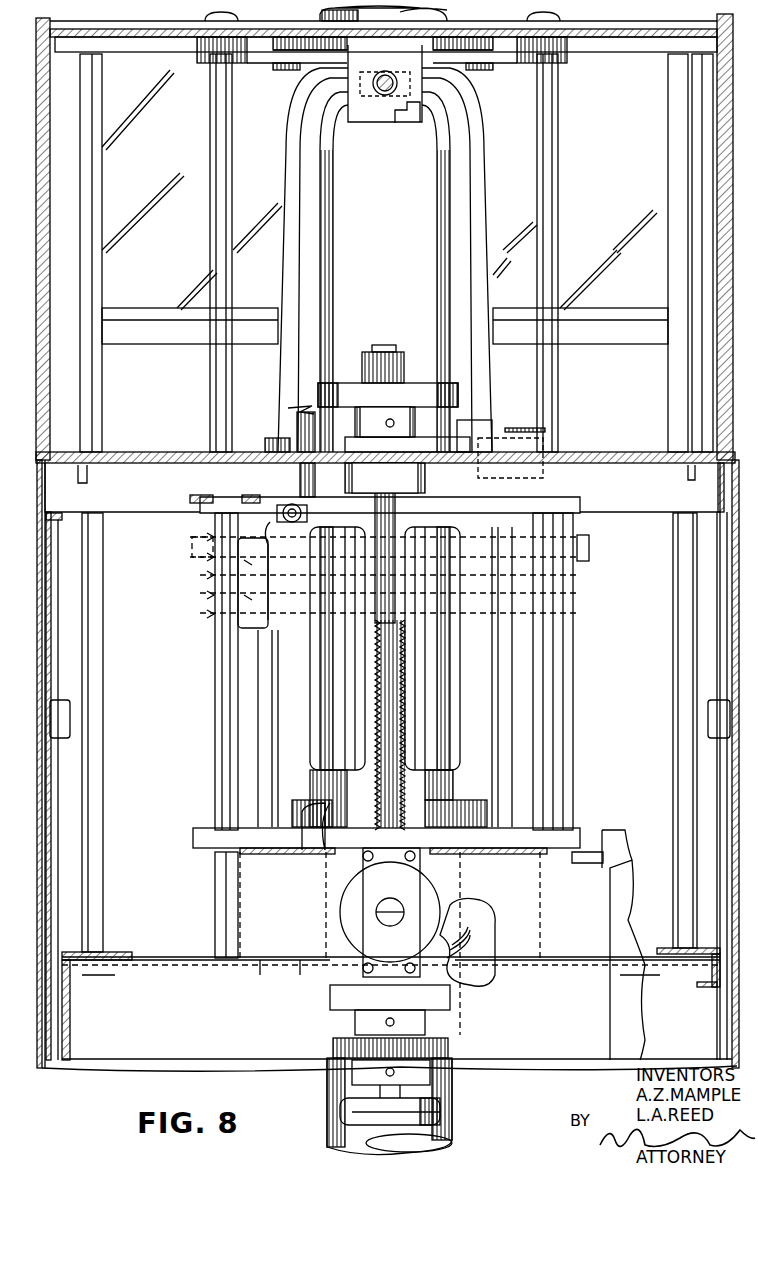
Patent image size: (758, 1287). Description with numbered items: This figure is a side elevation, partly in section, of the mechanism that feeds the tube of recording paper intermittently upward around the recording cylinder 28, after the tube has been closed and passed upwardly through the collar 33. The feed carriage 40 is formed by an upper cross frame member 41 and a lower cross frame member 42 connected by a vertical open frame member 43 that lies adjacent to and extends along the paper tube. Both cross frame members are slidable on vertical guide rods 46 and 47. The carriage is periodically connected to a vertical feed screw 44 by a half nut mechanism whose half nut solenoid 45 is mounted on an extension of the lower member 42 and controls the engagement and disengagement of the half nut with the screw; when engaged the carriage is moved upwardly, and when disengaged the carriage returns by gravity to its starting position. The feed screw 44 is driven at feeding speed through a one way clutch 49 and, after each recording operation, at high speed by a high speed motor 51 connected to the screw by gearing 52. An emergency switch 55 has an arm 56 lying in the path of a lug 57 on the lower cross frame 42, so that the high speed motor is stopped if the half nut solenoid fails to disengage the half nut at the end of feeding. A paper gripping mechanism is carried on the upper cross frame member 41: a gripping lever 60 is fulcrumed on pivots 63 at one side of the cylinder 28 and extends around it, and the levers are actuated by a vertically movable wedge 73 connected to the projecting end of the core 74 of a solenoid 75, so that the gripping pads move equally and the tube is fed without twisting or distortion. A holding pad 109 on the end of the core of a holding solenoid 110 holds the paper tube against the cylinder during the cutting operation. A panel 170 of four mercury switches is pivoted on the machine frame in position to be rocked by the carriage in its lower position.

The recording cylinder 28 is at (330, 1106).
The collar 33 is at (452, 948).
The feed carriage 40 is at (208, 746).
The upper cross frame member 41 is at (516, 497).
The lower cross frame member 42 is at (589, 543).
The vertical open frame member 43 is at (313, 711).
The vertical feed screw 44 is at (406, 713).
The half nut solenoid 45 is at (420, 906).
The vertical guide rod 46 is at (214, 220).
The vertical guide rod 47 is at (548, 240).
The one way clutch 49 is at (356, 395).
The high speed motor 51 is at (431, 1111).
The gearing 52 is at (428, 1050).
The emergency switch 55 is at (258, 630).
The arm 56 is at (270, 530).
The lug 57 is at (324, 543).
The gripping lever 60 is at (438, 492).
The pivots 63 is at (296, 483).
The wedge 73 is at (523, 426).
The core 74 is at (545, 483).
The solenoid 75 is at (574, 654).
The holding pad 109 is at (395, 102).
The holding solenoid 110 is at (411, 112).
The panel 170 is at (611, 830).